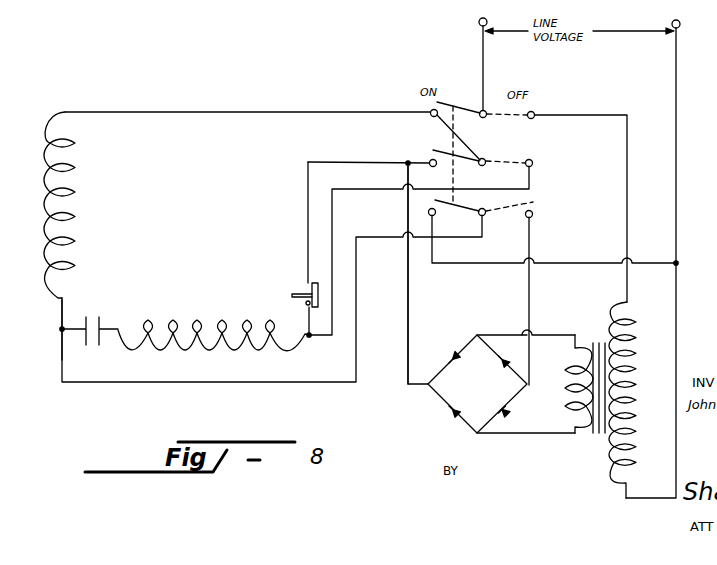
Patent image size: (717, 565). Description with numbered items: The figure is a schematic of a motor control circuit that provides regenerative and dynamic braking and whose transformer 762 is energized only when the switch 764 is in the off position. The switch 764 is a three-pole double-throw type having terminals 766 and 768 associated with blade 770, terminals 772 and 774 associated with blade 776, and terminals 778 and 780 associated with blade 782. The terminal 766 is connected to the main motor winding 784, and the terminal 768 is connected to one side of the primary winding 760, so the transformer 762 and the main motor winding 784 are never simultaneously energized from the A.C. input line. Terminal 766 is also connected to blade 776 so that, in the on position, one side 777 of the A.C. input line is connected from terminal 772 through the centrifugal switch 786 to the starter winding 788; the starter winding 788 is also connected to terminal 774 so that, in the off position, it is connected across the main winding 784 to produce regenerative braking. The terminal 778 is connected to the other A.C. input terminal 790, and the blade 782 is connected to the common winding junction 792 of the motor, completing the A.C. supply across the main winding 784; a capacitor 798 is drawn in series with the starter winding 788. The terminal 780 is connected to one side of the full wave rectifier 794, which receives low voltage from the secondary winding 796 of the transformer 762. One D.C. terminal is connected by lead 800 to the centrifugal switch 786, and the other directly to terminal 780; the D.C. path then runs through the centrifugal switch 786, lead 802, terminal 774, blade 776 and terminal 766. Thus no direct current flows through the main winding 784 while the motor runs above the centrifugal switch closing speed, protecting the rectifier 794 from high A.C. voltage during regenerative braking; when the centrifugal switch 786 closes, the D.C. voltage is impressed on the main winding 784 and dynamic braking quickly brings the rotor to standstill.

The side of the A.C. input line 777 is at (482, 41).
The terminal of the A.C. input 790 is at (683, 43).
The switch 764 is at (449, 81).
The terminal 766 is at (430, 109).
The blade 770 is at (441, 103).
The terminal 768 is at (536, 111).
The terminal 772 is at (373, 173).
The blade 776 is at (460, 166).
The terminal 774 is at (534, 167).
The terminal 778 is at (428, 214).
The blade 782 is at (471, 215).
The terminal 780 is at (533, 214).
The lead 802 is at (349, 190).
The lead 800 is at (406, 318).
The main motor winding 784 is at (72, 196).
The common winding junction 792 is at (61, 343).
The capacitor 798 is at (114, 308).
The starter winding 788 is at (173, 318).
The centrifugal switch 786 is at (309, 290).
The full wave rectifier 794 is at (442, 402).
The secondary winding 796 is at (567, 387).
The transformer 762 is at (595, 446).
The primary winding 760 is at (635, 366).